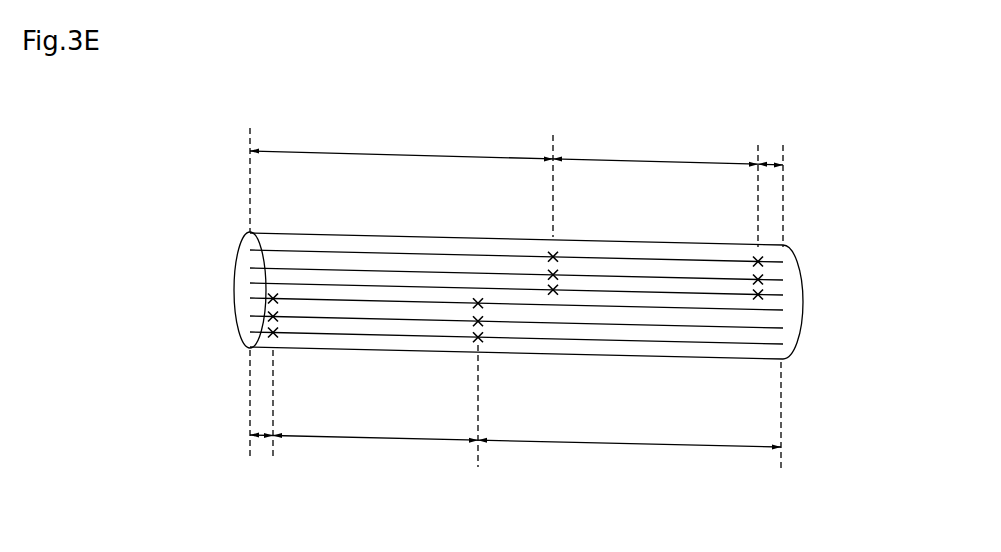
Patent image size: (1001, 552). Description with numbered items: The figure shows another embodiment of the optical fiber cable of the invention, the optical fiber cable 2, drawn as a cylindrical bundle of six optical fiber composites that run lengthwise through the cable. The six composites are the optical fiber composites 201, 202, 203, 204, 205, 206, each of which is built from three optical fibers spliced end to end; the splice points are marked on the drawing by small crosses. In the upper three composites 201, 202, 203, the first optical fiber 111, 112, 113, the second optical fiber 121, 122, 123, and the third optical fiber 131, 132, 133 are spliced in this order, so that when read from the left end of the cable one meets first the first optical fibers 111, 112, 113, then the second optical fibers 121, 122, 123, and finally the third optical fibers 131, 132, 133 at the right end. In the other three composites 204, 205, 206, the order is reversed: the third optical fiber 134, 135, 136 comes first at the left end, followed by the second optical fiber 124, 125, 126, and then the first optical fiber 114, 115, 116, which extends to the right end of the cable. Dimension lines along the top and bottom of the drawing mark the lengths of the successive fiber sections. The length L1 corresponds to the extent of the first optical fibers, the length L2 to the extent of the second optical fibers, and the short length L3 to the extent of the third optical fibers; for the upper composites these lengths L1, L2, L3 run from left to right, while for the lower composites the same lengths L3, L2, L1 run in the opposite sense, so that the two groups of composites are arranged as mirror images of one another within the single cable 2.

The optical fiber cable 2 is at (513, 343).
The optical fiber composite 201 is at (495, 221).
The optical fiber composite 202 is at (505, 230).
The optical fiber composite 203 is at (513, 239).
The optical fiber composite 204 is at (464, 352).
The optical fiber composite 205 is at (464, 384).
The optical fiber composite 206 is at (464, 409).
The first optical fiber 111 is at (330, 252).
The first optical fiber 112 is at (390, 271).
The first optical fiber 113 is at (455, 288).
The first optical fiber 114 is at (598, 340).
The first optical fiber 115 is at (656, 325).
The first optical fiber 116 is at (712, 308).
The second optical fiber 121 is at (600, 258).
The second optical fiber 122 is at (658, 277).
The second optical fiber 123 is at (713, 293).
The second optical fiber 124 is at (333, 302).
The second optical fiber 125 is at (396, 321).
The second optical fiber 126 is at (457, 337).
The third optical fiber 131 is at (783, 262).
The third optical fiber 132 is at (783, 280).
The third optical fiber 133 is at (783, 295).
The third optical fiber 134 is at (247, 335).
The third optical fiber 135 is at (249, 346).
The third optical fiber 136 is at (262, 345).
The length L1 is at (515, 301).
The length L2 is at (515, 300).
The length L3 is at (770, 160).